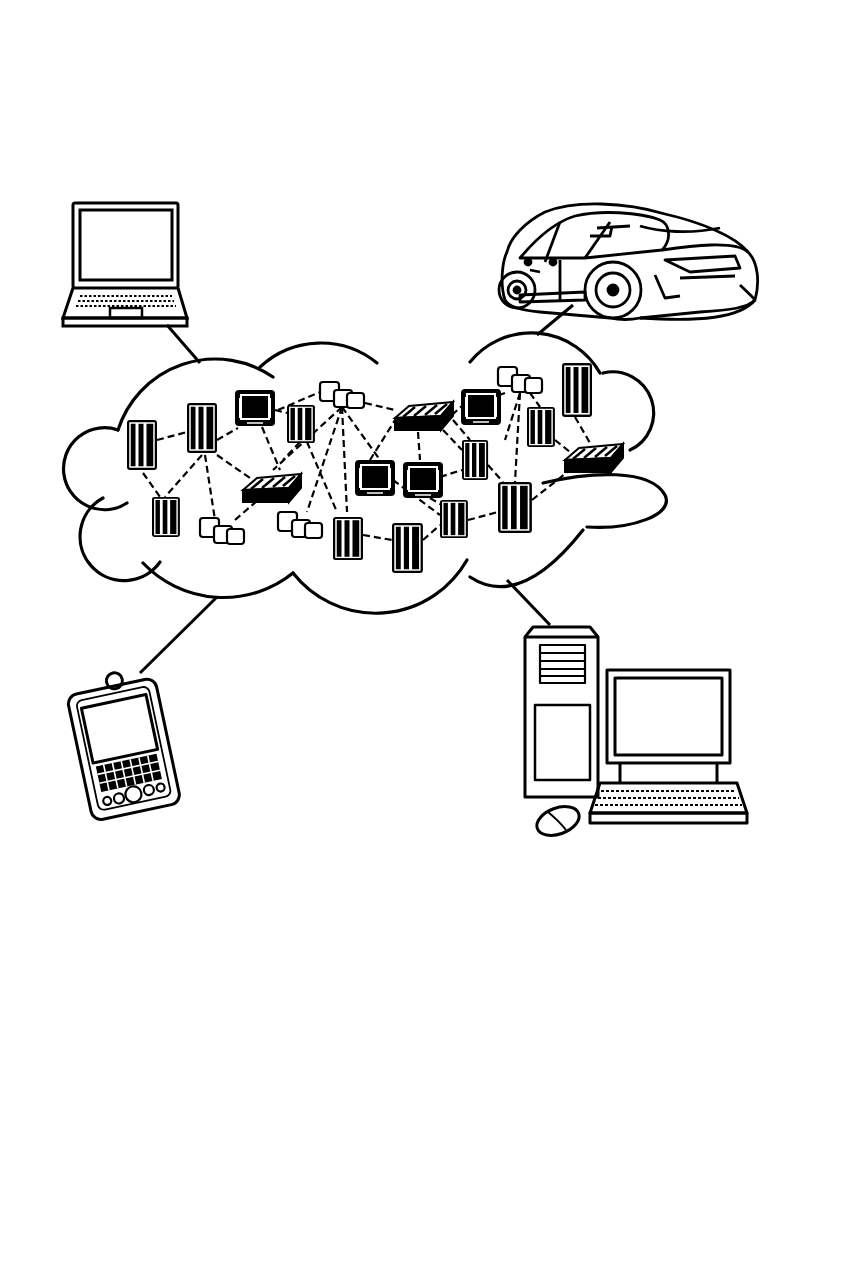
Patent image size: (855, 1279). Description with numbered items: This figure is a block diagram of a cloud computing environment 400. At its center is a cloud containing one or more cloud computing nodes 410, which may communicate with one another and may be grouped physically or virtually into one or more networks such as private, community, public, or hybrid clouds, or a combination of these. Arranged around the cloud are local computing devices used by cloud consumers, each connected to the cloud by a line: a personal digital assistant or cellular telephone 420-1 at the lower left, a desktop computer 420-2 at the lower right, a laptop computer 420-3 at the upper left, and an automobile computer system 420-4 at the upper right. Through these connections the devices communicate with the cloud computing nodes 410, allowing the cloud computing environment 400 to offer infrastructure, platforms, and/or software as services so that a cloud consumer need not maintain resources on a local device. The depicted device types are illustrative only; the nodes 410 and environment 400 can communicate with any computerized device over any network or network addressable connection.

The cloud computing environment 400 is at (303, 63).
The cloud computing nodes 410 is at (632, 478).
The personal digital assistant (PDA) or cellular telephone 420-1 is at (170, 740).
The desktop computer 420-2 is at (667, 669).
The laptop computer 420-3 is at (178, 252).
The automobile computer system 420-4 is at (504, 262).